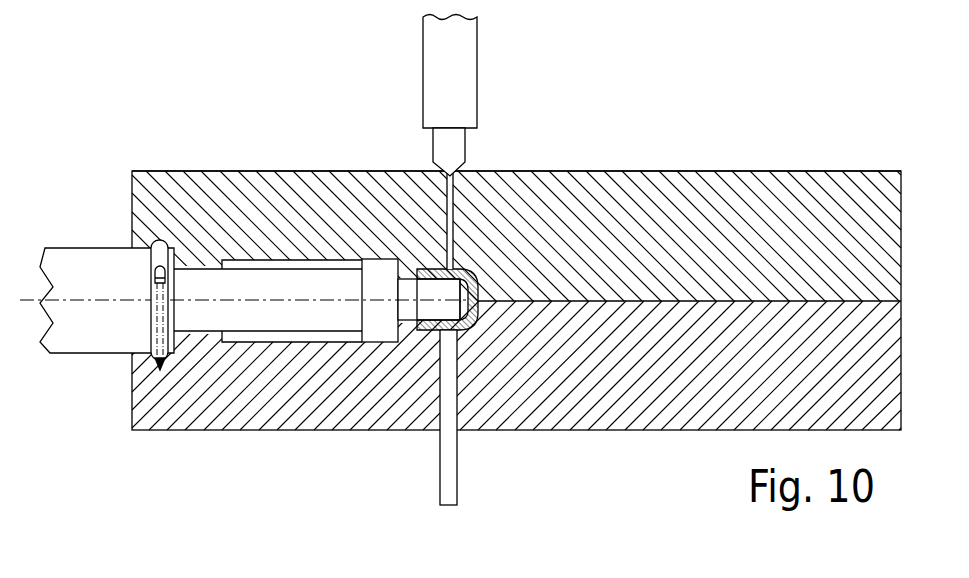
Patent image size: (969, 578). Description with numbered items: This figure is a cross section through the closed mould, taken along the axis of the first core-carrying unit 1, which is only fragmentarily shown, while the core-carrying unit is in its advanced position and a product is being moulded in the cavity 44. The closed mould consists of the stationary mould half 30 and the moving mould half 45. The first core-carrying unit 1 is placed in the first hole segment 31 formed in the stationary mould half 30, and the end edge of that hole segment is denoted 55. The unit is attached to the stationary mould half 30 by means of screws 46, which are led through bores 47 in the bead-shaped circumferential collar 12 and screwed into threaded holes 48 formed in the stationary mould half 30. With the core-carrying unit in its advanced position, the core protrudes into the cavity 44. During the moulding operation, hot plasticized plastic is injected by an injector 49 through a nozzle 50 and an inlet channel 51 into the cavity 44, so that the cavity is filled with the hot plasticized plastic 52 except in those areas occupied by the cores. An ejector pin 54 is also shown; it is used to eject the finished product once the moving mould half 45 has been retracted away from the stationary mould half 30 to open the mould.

The first core-carrying unit 1 is at (67, 229).
The circumferential collar 12 is at (155, 253).
The stationary mould half 30 is at (684, 430).
The first hole segment 31 is at (263, 335).
The cavity 44 is at (480, 331).
The moving mould half 45 is at (743, 171).
The screws 46 is at (158, 325).
The bores 47 is at (156, 277).
The threaded holes 48 is at (153, 366).
The injector 49 is at (437, 38).
The nozzle 50 is at (445, 138).
The inlet channel 51 is at (463, 170).
The hot plasticized plastic 52 is at (437, 333).
The ejector pin 54 is at (449, 507).
The end edge of the first hole segment 55 is at (358, 275).